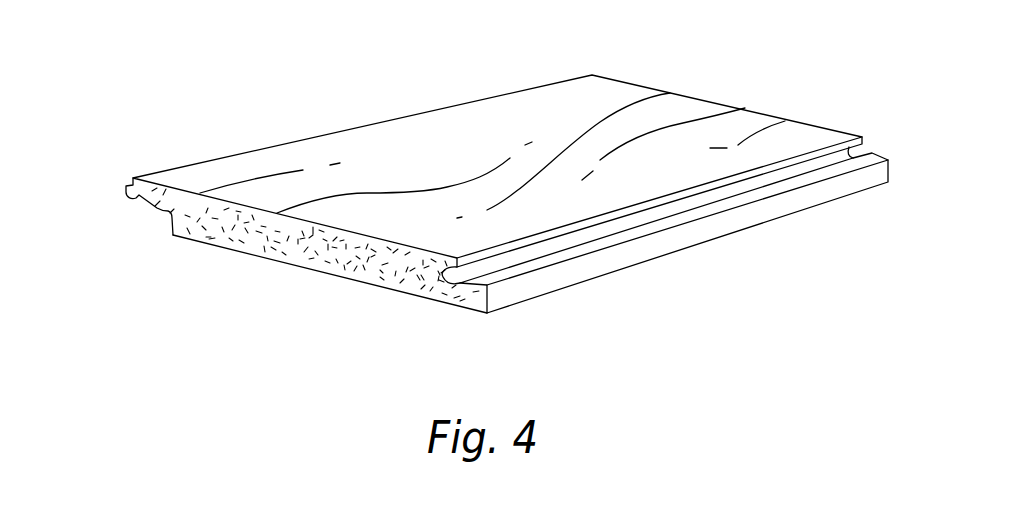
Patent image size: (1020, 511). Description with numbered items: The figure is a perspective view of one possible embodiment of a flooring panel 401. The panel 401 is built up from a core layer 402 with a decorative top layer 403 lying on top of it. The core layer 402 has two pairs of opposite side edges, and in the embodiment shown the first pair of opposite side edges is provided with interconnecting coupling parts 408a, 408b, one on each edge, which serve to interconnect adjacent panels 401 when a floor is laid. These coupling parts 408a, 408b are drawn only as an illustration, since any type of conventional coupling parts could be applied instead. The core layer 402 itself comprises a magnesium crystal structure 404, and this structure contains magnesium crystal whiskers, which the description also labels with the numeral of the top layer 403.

The flooring panel 401 is at (142, 128).
The core layer 402 is at (365, 268).
The decorative top layer 403 is at (472, 132).
The magnesium crystal structure 404 is at (253, 252).
The interconnecting coupling part 408a is at (127, 196).
The interconnecting coupling part 408b is at (638, 249).